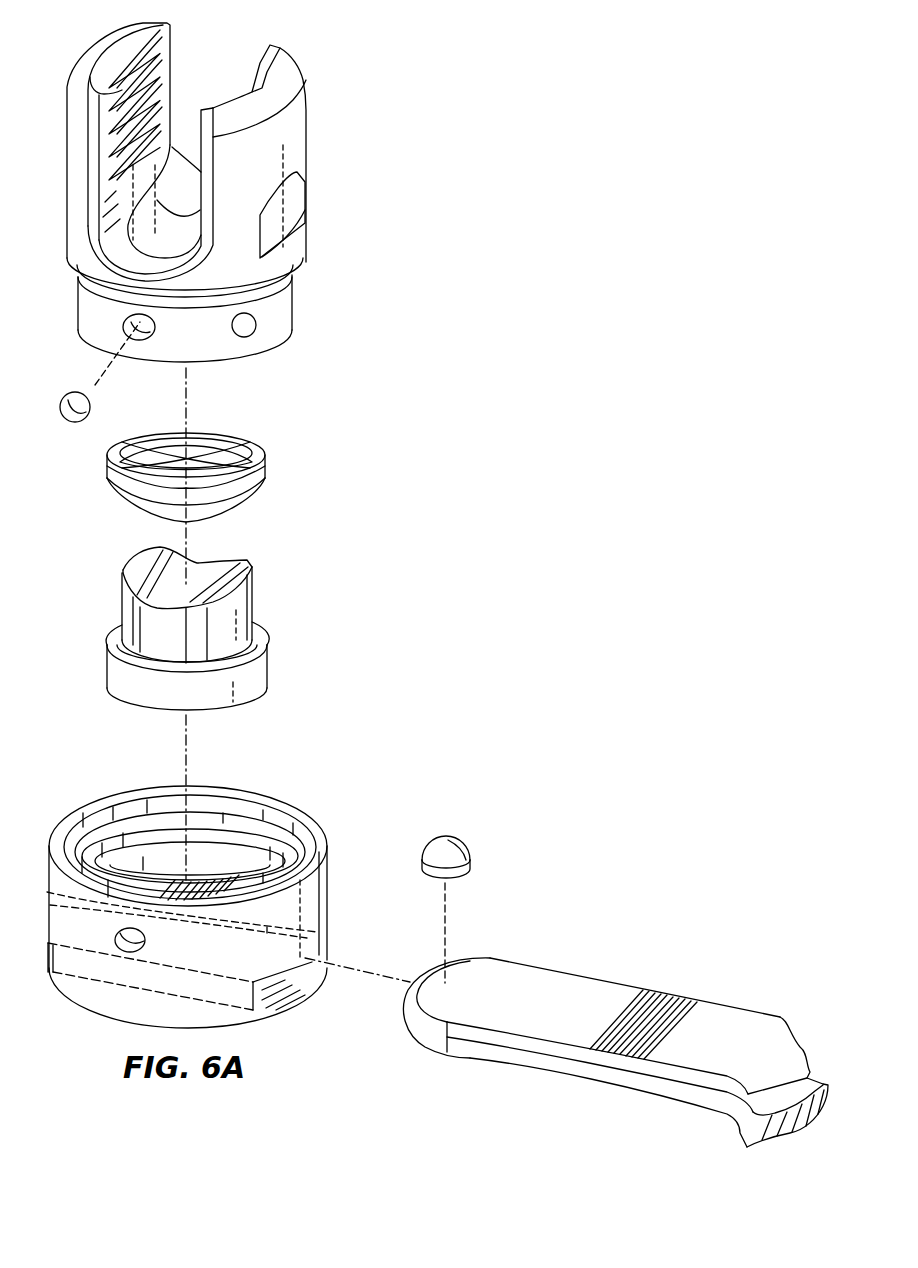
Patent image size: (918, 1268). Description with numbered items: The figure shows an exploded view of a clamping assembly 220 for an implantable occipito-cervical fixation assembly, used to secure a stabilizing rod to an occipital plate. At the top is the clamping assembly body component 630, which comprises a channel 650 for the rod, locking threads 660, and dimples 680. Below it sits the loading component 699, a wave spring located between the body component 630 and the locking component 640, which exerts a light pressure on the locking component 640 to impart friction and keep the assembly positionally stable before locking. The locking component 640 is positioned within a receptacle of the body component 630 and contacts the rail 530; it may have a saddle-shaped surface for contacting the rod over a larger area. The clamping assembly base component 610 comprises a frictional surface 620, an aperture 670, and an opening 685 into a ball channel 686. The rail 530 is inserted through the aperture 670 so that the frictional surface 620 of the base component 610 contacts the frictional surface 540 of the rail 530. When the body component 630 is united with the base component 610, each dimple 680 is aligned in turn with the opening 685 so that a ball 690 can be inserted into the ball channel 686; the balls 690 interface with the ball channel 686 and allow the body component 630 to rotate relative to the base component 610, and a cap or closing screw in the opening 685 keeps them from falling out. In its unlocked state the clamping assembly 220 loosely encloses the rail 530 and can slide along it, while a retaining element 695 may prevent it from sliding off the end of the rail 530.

The clamping assembly 220 is at (379, 180).
The clamping assembly body component 630 is at (307, 157).
The locking threads 660 is at (150, 63).
The channel 650 is at (178, 152).
The dimples 680 is at (144, 340).
The ball 690 is at (72, 401).
The loading component 699 is at (107, 467).
The locking component 640 is at (120, 612).
The clamping assembly base component 610 is at (310, 810).
The ball channel 686 is at (290, 843).
The aperture 670 is at (270, 988).
The frictional surface 620 is at (300, 978).
The opening 685 is at (117, 948).
The retaining element 695 is at (470, 848).
The rail 530 is at (417, 1030).
The frictional surface 540 is at (589, 1081).